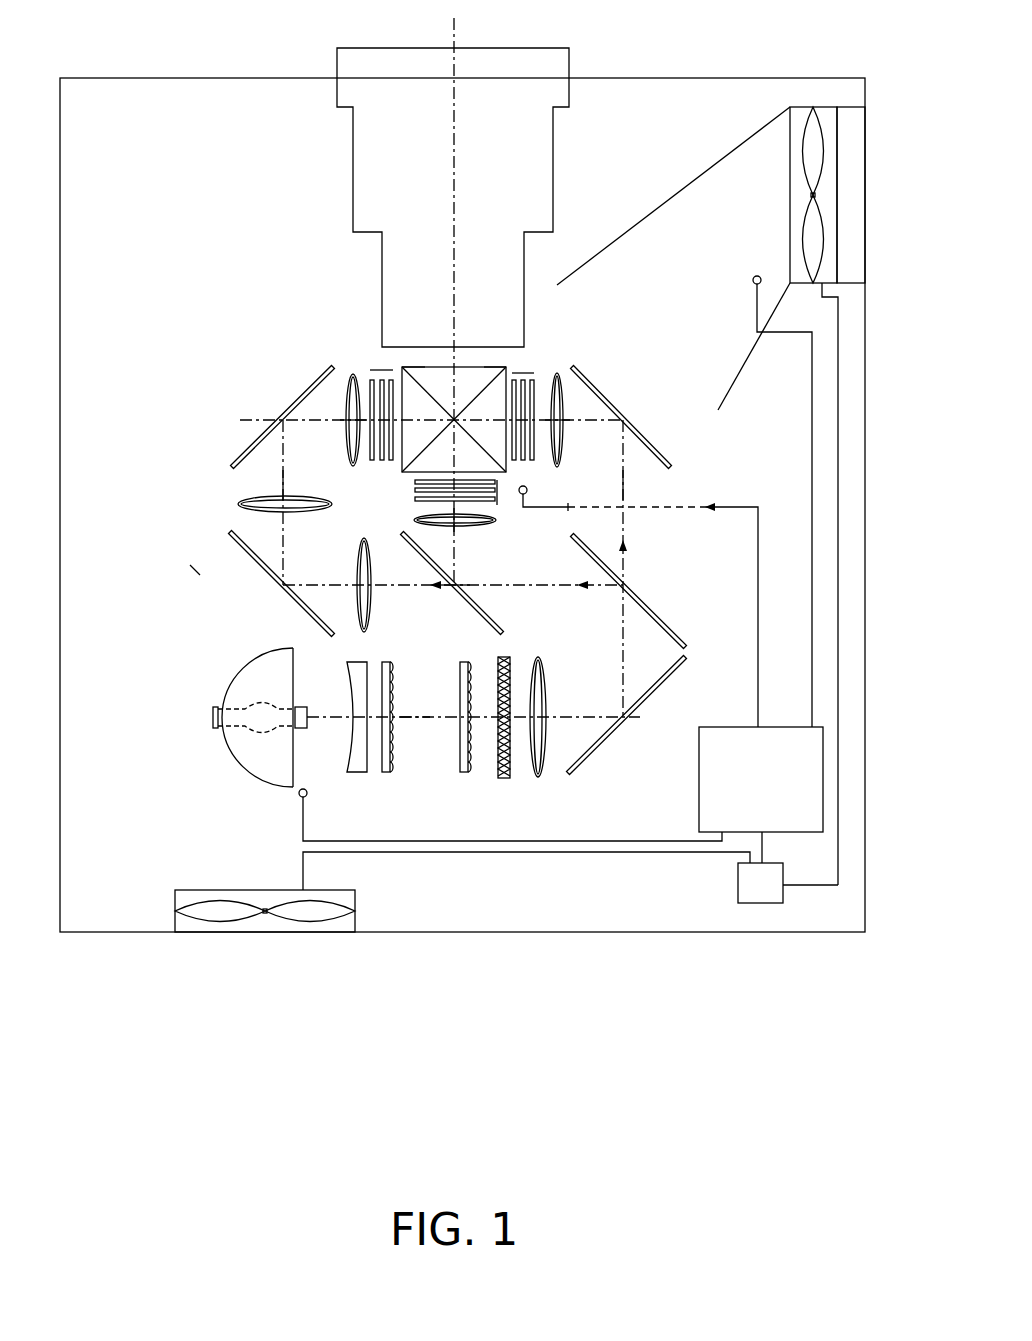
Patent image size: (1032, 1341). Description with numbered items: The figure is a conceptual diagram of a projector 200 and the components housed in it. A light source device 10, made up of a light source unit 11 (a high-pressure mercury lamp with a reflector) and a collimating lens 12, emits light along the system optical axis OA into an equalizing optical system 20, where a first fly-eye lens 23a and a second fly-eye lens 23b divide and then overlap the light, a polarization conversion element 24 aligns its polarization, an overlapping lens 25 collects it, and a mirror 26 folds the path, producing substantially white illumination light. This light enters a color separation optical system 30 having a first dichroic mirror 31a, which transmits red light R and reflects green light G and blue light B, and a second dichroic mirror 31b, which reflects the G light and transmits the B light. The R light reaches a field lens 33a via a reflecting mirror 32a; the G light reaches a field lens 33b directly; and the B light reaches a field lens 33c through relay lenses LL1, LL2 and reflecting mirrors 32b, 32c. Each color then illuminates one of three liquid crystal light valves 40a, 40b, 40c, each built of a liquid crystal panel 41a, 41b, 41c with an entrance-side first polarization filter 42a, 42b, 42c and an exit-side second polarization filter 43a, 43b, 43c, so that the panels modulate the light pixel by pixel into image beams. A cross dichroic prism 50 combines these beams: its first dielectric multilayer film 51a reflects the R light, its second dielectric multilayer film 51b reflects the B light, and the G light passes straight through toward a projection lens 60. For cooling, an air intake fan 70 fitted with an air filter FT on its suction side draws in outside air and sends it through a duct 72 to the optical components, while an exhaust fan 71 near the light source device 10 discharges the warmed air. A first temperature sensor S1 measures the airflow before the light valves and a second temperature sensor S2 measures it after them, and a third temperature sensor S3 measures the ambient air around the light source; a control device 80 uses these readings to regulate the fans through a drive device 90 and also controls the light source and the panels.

The projector 200 is at (768, 35).
The projection lens 60 is at (553, 190).
The duct 72 is at (698, 173).
The air intake fan 70 is at (806, 285).
The air filter FT is at (840, 105).
The first temperature sensor S1 is at (753, 281).
The cross dichroic prism 50 is at (425, 361).
The first dielectric multilayer film 51a is at (403, 364).
The second dielectric multilayer film 51b is at (503, 364).
The liquid crystal light valve 40a is at (548, 372).
The liquid crystal light valve 40b is at (503, 512).
The liquid crystal light valve 40c is at (368, 370).
The liquid crystal panel 41a is at (528, 400).
The liquid crystal panel 41b is at (497, 490).
The liquid crystal panel 41c is at (378, 403).
The first polarization filter 42a is at (562, 418).
The first polarization filter 42b is at (423, 528).
The first polarization filter 42c is at (355, 468).
The second polarization filter 43a is at (533, 378).
The second polarization filter 43b is at (414, 482).
The second polarization filter 43c is at (385, 462).
The field lens 33a is at (560, 382).
The field lens 33b is at (456, 528).
The field lens 33c is at (352, 428).
The reflecting mirror 32a is at (675, 460).
The reflecting mirror 32b is at (258, 560).
The reflecting mirror 32c is at (235, 460).
The first dichroic mirror 31a is at (658, 620).
The second dichroic mirror 31b is at (488, 618).
The color separation optical system 30 is at (186, 568).
The mirror 26 is at (635, 707).
The relay lens LL1 is at (372, 612).
The relay lens LL2 is at (240, 505).
The blue light B is at (283, 488).
The green light G is at (458, 570).
The red light R is at (627, 492).
The second temperature sensor S2 is at (528, 488).
The system optical axis OA is at (410, 720).
The light source device 10 is at (217, 730).
The light source unit 11 is at (262, 768).
The collimating lens 12 is at (355, 772).
The equalizing optical system 20 is at (477, 733).
The first fly-eye lens 23a is at (385, 773).
The second fly-eye lens 23b is at (462, 773).
The polarization conversion element 24 is at (497, 660).
The overlapping lens 25 is at (546, 777).
The third temperature sensor S3 is at (300, 800).
The exhaust fan 71 is at (188, 888).
The control device 80 is at (770, 737).
The drive device 90 is at (783, 870).